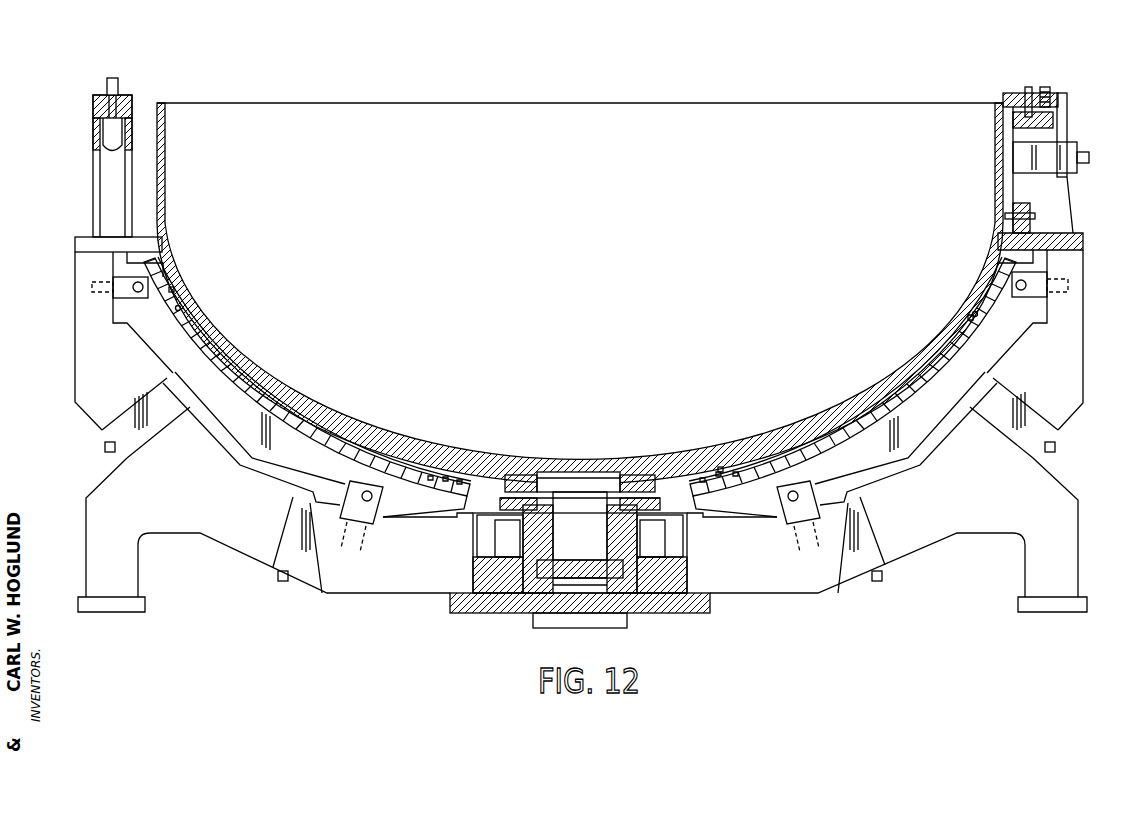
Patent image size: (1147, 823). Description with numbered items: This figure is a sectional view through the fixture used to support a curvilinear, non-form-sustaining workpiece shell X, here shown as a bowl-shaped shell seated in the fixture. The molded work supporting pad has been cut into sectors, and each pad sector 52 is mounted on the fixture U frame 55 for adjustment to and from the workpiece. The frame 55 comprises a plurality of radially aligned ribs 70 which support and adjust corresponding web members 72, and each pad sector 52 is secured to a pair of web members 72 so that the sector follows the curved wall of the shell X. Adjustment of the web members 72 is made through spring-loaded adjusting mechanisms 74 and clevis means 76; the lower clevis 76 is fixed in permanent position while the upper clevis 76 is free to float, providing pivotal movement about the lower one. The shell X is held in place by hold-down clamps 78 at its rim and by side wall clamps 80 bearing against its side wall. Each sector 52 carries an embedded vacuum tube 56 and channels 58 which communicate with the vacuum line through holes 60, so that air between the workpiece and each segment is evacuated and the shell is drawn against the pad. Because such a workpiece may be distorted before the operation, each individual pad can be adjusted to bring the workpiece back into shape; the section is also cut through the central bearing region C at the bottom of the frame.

The workpiece shell X is at (580, 272).
The pad sector 52 is at (303, 420).
The fixture U frame 55 is at (76, 379).
The vacuum tube 56 is at (180, 308).
The channels 58 is at (174, 290).
The holes 60 is at (431, 478).
The radially aligned ribs 70 is at (243, 537).
The web members 72 is at (240, 400).
The spring-loaded adjusting mechanisms 74 is at (122, 431).
The clevis means 76 is at (140, 278).
The hold-down clamps 78 is at (1040, 93).
The side wall clamps 80 is at (1079, 142).
The central bearing C is at (405, 602).